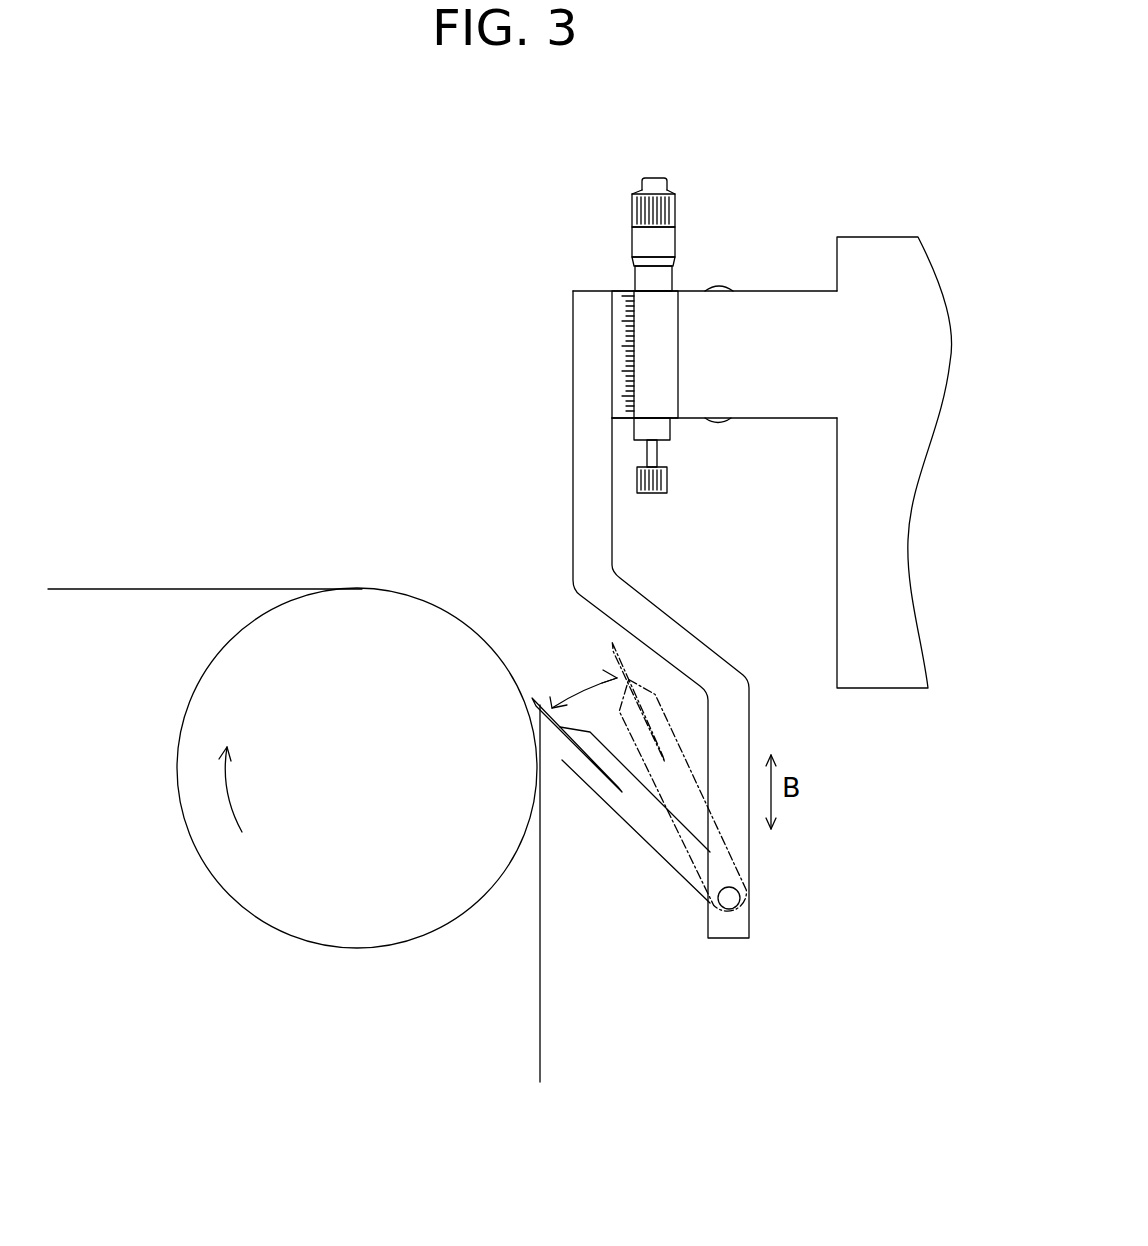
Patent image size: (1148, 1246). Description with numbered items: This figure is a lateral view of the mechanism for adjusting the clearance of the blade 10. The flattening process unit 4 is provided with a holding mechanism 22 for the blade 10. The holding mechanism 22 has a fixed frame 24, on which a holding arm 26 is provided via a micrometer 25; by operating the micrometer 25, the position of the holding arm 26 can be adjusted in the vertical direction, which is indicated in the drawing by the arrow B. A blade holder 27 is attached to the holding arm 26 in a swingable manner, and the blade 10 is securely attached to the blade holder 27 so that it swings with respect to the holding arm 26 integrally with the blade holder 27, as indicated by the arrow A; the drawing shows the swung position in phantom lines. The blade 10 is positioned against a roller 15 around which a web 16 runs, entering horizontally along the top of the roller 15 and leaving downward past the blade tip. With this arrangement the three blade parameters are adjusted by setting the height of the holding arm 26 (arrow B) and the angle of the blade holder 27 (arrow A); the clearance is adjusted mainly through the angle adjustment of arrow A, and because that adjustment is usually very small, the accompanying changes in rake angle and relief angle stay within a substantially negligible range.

The flattening process unit 4 is at (377, 294).
The blade 10 is at (542, 702).
The roller 15 is at (371, 804).
The web 16 is at (152, 588).
The holding mechanism 22 is at (487, 437).
The fixed frame 24 is at (880, 257).
The micrometer 25 is at (668, 238).
The holding arm 26 is at (583, 353).
The blade holder 27 is at (693, 793).